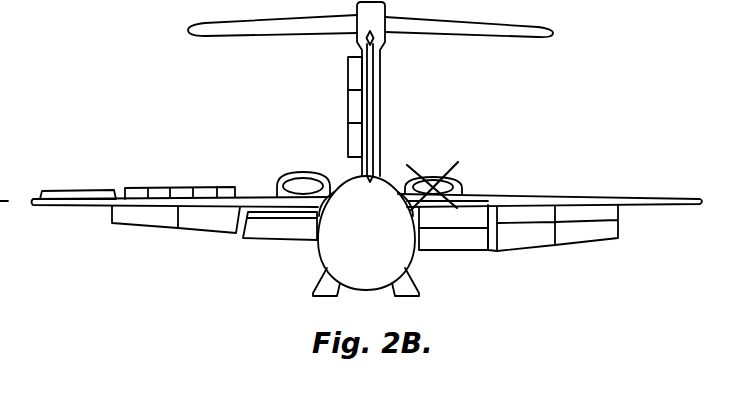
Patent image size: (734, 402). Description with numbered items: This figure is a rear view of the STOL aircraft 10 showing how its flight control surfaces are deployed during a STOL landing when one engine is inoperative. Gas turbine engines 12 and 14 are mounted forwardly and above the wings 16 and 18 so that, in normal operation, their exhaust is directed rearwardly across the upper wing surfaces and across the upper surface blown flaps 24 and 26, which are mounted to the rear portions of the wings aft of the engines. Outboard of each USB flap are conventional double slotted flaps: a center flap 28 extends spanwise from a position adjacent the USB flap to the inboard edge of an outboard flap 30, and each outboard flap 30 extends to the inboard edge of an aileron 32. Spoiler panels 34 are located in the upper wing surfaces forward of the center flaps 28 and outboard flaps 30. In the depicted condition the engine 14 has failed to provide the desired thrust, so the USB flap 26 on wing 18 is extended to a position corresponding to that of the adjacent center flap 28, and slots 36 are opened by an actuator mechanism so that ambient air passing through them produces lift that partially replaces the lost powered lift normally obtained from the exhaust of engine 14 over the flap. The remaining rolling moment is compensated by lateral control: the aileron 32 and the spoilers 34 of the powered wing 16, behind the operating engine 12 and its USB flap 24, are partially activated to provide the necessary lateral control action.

The STOL aircraft 10 is at (383, 167).
The gas turbine engine 12 is at (316, 160).
The gas turbine engine 14 is at (437, 175).
The wing 16 is at (75, 208).
The wing 18 is at (680, 206).
The upper surface blown flap 24 is at (268, 240).
The upper surface blown flap 26 is at (487, 250).
The center flap 28 is at (198, 233).
The outboard flap 30 is at (138, 228).
The aileron 32 is at (92, 176).
The spoiler panels 34 is at (226, 186).
The slots 36 is at (468, 210).